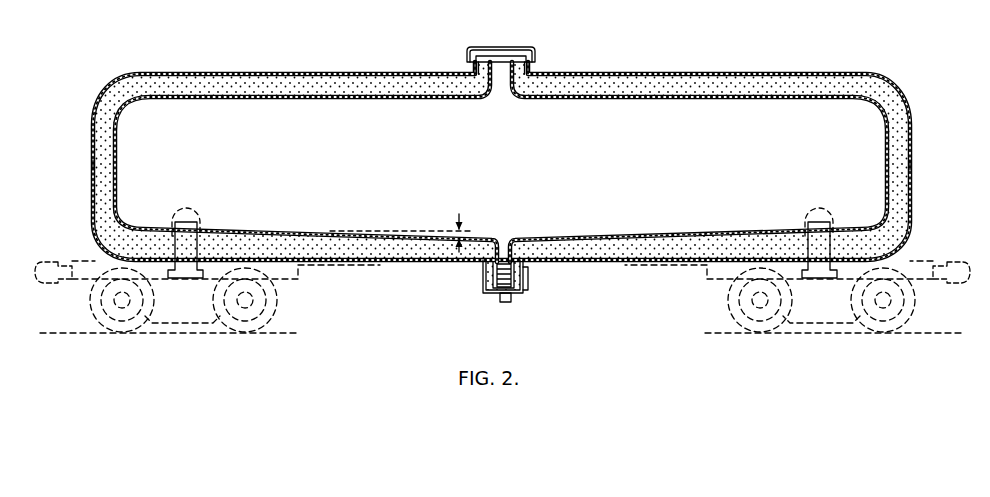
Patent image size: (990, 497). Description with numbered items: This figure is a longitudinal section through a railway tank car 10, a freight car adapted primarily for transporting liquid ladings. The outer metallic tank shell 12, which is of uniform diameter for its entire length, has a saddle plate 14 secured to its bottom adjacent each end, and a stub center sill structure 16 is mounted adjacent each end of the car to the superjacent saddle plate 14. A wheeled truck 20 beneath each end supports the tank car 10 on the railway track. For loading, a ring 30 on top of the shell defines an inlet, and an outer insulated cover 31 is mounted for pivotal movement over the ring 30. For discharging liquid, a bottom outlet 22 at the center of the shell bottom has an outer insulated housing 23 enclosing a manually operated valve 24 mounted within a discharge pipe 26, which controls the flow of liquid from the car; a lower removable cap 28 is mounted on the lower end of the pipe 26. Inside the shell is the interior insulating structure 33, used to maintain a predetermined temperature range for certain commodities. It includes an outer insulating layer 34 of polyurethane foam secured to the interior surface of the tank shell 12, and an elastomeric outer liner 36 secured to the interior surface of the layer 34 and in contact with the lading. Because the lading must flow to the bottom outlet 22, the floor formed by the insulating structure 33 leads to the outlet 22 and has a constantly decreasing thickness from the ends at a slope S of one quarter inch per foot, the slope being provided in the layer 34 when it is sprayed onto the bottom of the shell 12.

The railway tank car 10 is at (752, 70).
The outer metallic tank shell 12 is at (684, 74).
The saddle plate 14 is at (338, 266).
The stub center sill structure 16 is at (79, 259).
The wheeled truck 20 is at (100, 304).
The bottom outlet 22 is at (483, 287).
The outer insulated housing 23 is at (491, 278).
The manually operated valve 24 is at (507, 262).
The discharge pipe 26 is at (514, 289).
The lower removable cap 28 is at (507, 303).
The ring 30 is at (534, 68).
The outer insulated cover 31 is at (512, 47).
The interior insulating structure 33 is at (230, 225).
The outer insulating layer 34 is at (232, 92).
The elastomeric outer liner 36 is at (292, 100).
The slope S is at (470, 230).